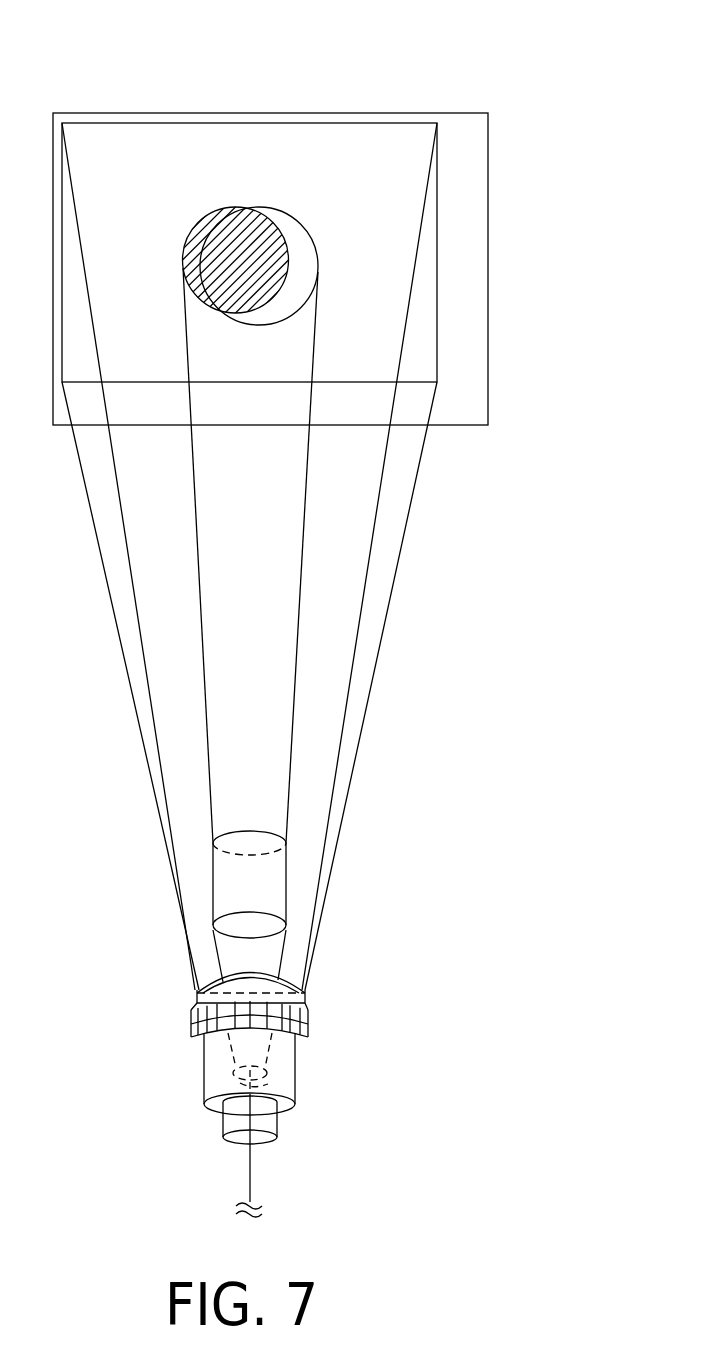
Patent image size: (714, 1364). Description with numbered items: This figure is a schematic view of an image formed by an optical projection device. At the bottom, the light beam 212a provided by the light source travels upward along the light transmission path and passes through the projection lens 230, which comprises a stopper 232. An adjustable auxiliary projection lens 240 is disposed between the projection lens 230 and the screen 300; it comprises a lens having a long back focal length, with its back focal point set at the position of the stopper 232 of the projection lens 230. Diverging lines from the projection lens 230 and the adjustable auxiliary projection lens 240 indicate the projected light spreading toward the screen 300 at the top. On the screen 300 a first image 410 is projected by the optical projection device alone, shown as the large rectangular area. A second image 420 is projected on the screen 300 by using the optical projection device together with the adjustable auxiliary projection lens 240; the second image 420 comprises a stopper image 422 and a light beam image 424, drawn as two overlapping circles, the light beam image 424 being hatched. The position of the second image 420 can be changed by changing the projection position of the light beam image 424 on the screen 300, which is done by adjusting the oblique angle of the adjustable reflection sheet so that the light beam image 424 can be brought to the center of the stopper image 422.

The screen 300 is at (465, 257).
The first image 410 is at (407, 188).
The second image 420 is at (236, 165).
The stopper image 422 is at (299, 243).
The light beam image 424 is at (203, 218).
The adjustable auxiliary projection lens 240 is at (260, 887).
The projection lens 230 is at (282, 1062).
The stopper 232 is at (280, 1078).
The light beam 212a is at (250, 1177).